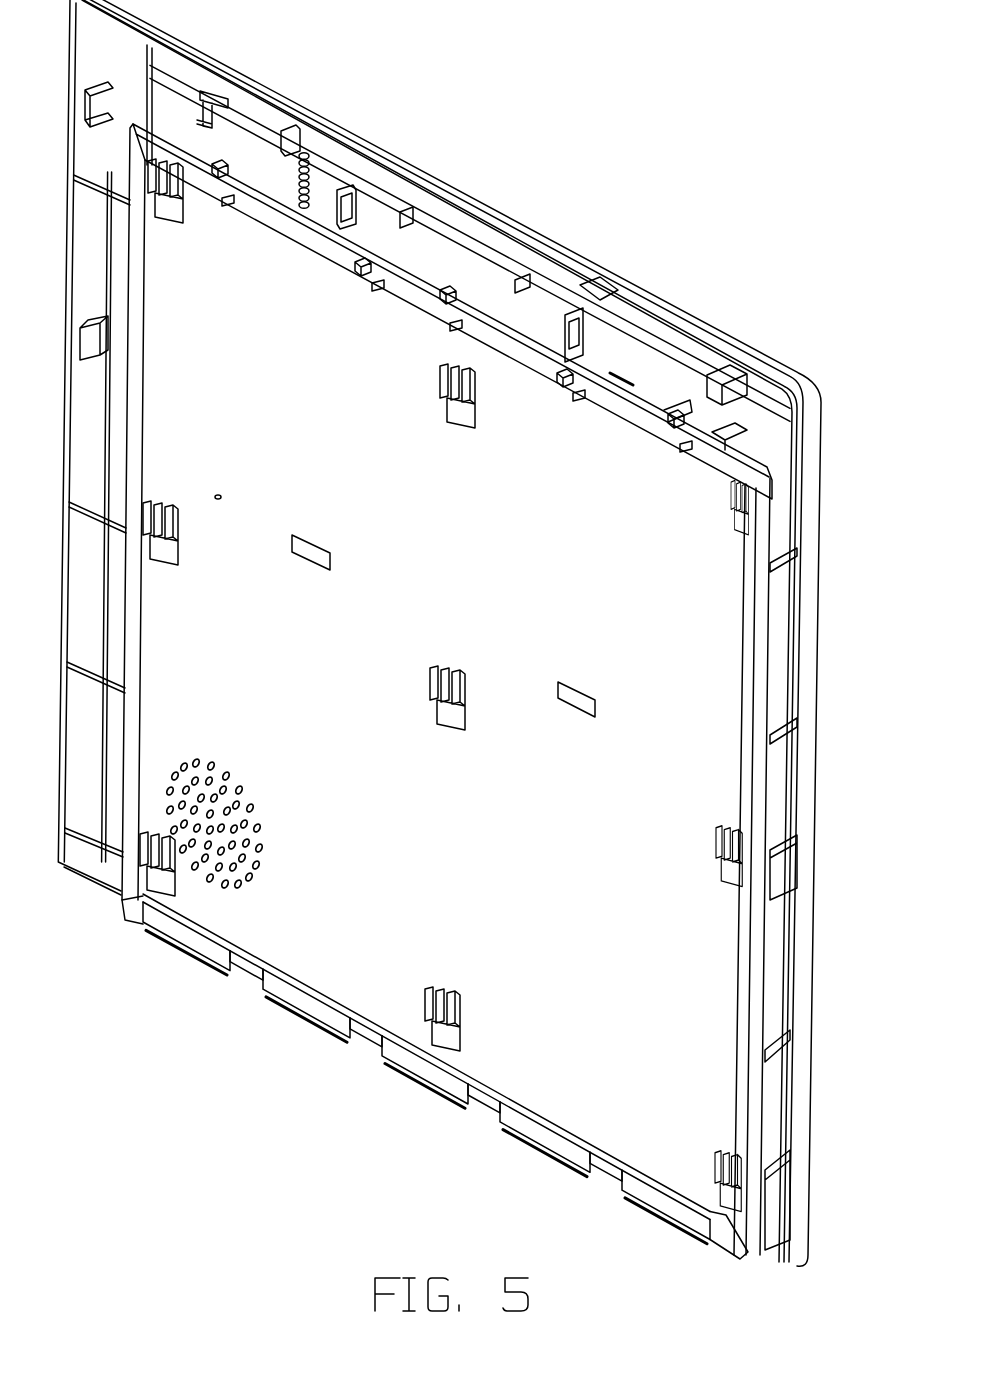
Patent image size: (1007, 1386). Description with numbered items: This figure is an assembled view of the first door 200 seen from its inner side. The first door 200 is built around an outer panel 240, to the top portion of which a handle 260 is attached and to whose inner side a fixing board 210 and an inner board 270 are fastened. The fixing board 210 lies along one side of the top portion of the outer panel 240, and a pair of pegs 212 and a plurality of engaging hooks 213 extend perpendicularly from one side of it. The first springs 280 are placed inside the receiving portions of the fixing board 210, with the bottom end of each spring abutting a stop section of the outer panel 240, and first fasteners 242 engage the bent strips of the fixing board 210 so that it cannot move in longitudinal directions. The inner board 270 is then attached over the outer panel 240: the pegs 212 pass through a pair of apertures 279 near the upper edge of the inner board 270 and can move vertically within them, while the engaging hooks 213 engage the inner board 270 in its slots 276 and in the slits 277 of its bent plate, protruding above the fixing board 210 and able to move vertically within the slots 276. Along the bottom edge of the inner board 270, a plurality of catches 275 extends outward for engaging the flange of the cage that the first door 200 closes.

The first door 200 is at (321, 1106).
The fixing board 210 is at (431, 647).
The pegs 212 is at (392, 273).
The engaging hooks 213 is at (596, 432).
The outer panel 240 is at (451, 633).
The first fasteners 242 is at (324, 127).
The handle 260 is at (470, 236).
The inner board 270 is at (518, 689).
The catches 275 is at (435, 1076).
The slots 276 is at (444, 685).
The slits 277 is at (633, 457).
The apertures 279 is at (457, 323).
The first springs 280 is at (333, 132).